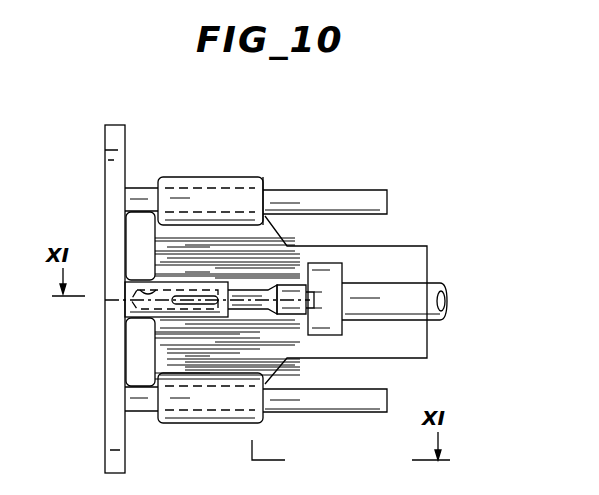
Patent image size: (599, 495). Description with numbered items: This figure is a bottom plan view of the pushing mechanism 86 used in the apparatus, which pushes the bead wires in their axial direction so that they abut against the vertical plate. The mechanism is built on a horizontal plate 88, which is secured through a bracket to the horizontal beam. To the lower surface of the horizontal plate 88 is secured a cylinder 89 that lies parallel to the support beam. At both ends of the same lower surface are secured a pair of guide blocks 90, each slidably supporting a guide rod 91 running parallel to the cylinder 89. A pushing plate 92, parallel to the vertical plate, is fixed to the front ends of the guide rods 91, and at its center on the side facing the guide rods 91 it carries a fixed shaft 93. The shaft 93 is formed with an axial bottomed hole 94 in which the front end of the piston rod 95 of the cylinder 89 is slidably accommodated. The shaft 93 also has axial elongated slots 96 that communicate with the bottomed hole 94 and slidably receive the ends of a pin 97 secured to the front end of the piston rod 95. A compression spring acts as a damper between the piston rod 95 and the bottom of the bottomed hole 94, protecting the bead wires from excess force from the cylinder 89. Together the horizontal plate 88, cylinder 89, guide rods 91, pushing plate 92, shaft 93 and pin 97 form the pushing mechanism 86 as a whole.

The pushing mechanism 86 is at (268, 188).
The horizontal plate 88 is at (393, 248).
The cylinder 89 is at (432, 283).
The guide blocks 90 is at (195, 178).
The guide rods 91 is at (342, 190).
The pushing plate 92 is at (115, 395).
The shaft 93 is at (178, 318).
The bottomed hole 94 is at (150, 292).
The piston rod 95 is at (284, 310).
The elongated slots 96 is at (183, 299).
The pin 97 is at (222, 298).